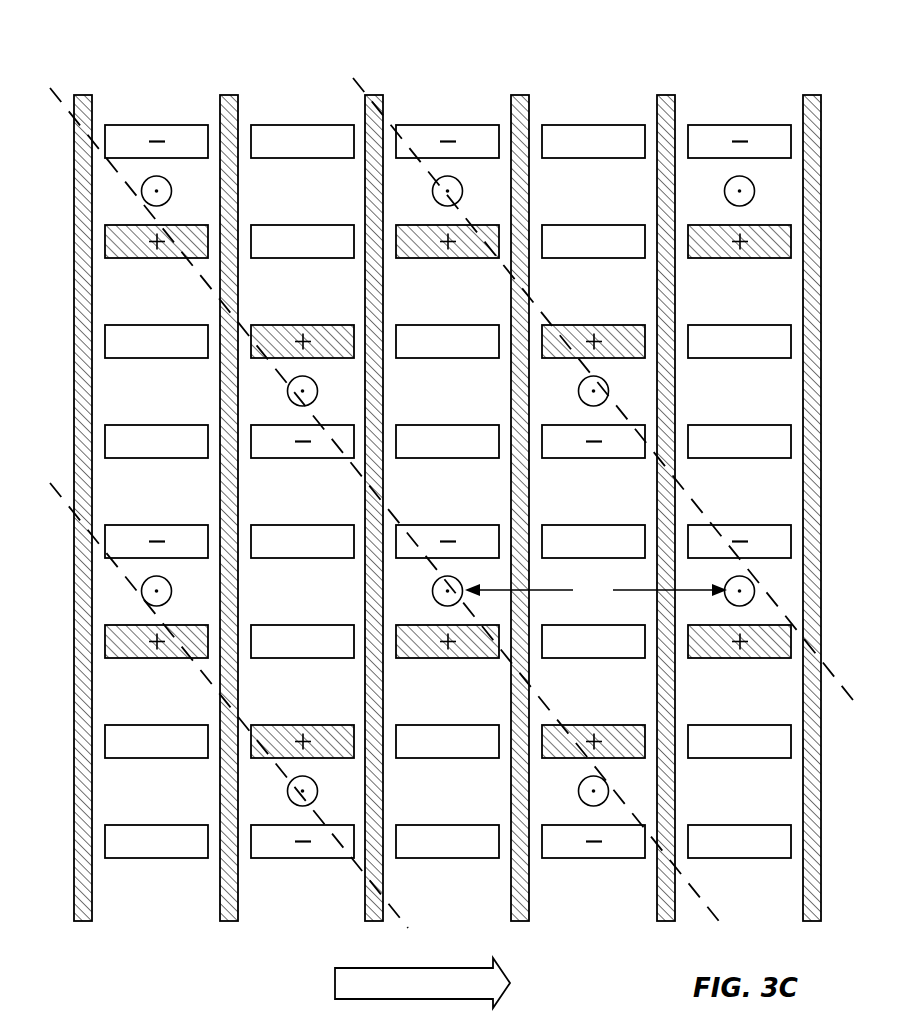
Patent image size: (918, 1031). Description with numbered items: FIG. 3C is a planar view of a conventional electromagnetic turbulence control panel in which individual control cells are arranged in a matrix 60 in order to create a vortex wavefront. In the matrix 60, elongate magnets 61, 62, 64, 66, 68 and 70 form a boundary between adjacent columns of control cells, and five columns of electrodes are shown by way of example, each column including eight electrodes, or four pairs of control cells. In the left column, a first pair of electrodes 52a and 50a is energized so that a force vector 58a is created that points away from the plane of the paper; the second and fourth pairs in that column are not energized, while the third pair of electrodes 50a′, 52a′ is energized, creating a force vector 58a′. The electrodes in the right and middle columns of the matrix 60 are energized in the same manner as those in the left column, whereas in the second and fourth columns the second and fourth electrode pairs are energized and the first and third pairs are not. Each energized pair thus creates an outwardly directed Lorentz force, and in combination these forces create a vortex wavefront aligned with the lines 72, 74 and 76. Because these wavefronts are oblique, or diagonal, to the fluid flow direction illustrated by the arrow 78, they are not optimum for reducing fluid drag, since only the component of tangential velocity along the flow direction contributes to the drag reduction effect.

The matrix 60 is at (483, 66).
The elongate magnet 61 is at (104, 490).
The elongate magnet 62 is at (249, 490).
The elongate magnet 64 is at (394, 490).
The elongate magnet 66 is at (540, 490).
The elongate magnet 68 is at (686, 490).
The elongate magnet 70 is at (832, 490).
The electrode 52a is at (156, 123).
The force vector 58a is at (172, 188).
The electrode 50a is at (156, 261).
The electrode 52a′ is at (156, 523).
The force vector 58a′ is at (172, 588).
The electrode 50a′ is at (156, 661).
The line 72 is at (242, 705).
The line 74 is at (403, 506).
The line 76 is at (615, 389).
The arrow 78 is at (422, 971).